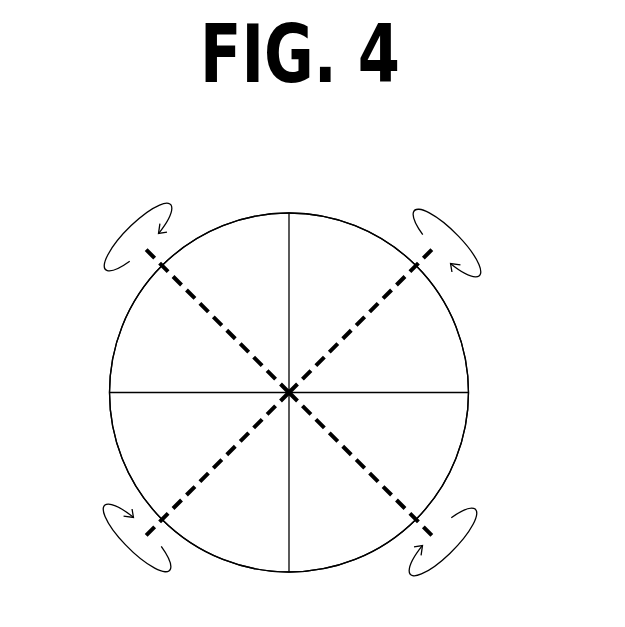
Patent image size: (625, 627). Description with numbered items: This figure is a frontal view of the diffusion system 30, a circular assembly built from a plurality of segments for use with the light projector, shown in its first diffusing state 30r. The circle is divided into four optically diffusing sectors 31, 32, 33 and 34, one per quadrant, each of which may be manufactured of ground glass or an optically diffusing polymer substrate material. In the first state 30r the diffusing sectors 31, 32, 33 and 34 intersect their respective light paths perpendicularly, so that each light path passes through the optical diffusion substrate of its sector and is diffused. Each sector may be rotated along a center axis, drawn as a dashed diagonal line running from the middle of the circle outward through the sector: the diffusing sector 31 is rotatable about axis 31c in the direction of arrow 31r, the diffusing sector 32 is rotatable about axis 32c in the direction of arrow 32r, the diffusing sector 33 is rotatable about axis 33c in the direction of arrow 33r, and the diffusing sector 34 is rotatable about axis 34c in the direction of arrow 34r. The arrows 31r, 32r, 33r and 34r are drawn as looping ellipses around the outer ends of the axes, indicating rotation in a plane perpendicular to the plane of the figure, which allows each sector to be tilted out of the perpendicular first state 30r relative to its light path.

The diffusion system 30 is at (220, 215).
The first state 30r is at (317, 207).
The diffusing sector 31 is at (257, 307).
The axis 31c is at (212, 327).
The arrow 31r is at (93, 242).
The diffusing sector 32 is at (409, 349).
The axis 32c is at (352, 313).
The arrow 32r is at (485, 242).
The diffusing sector 33 is at (360, 510).
The axis 33c is at (377, 468).
The arrow 33r is at (450, 558).
The diffusing sector 34 is at (197, 456).
The axis 34c is at (222, 468).
The arrow 34r is at (118, 552).